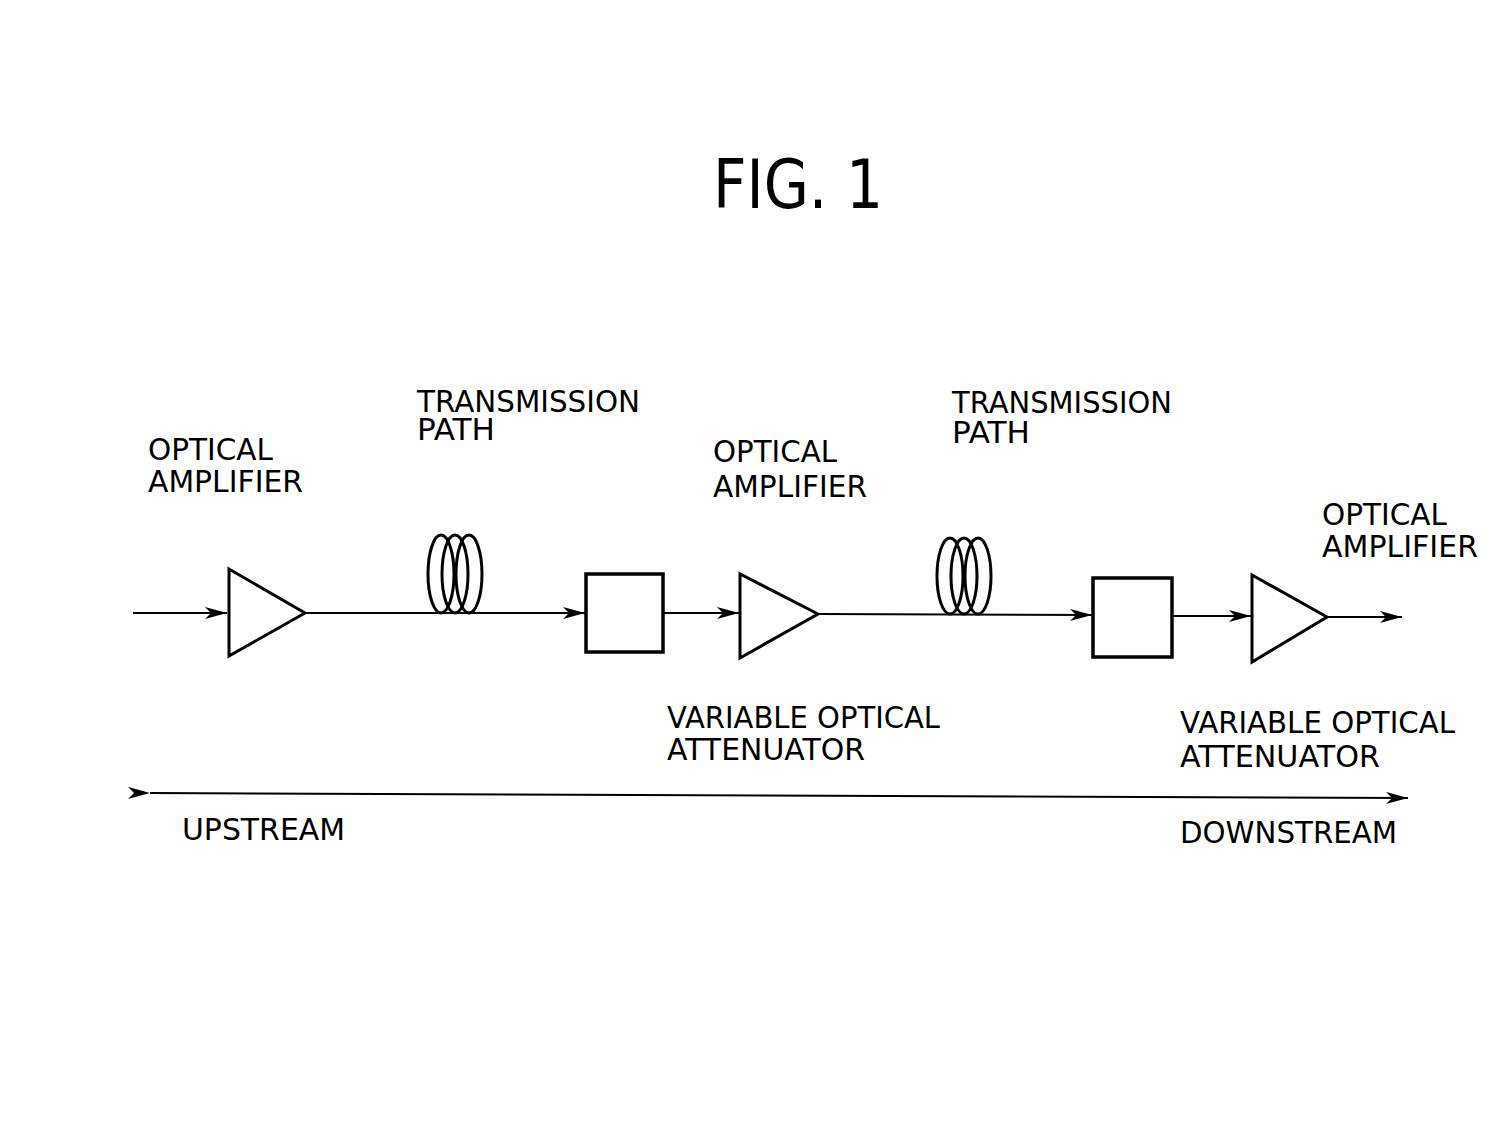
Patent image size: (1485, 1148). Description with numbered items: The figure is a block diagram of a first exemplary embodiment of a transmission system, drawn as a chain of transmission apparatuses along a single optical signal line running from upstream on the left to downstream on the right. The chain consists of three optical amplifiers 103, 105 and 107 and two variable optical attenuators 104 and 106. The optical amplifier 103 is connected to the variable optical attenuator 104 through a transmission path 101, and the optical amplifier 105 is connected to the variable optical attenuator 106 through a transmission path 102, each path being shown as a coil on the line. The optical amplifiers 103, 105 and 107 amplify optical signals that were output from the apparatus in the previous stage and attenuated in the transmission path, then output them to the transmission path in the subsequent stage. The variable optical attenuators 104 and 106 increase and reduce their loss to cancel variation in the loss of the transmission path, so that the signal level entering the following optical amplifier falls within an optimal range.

The transmission path 101 is at (478, 538).
The transmission path 102 is at (982, 540).
The optical amplifier 103 is at (259, 580).
The variable optical attenuator 104 is at (620, 653).
The optical amplifier 105 is at (767, 584).
The variable optical attenuator 106 is at (1128, 658).
The optical amplifier 107 is at (1268, 578).